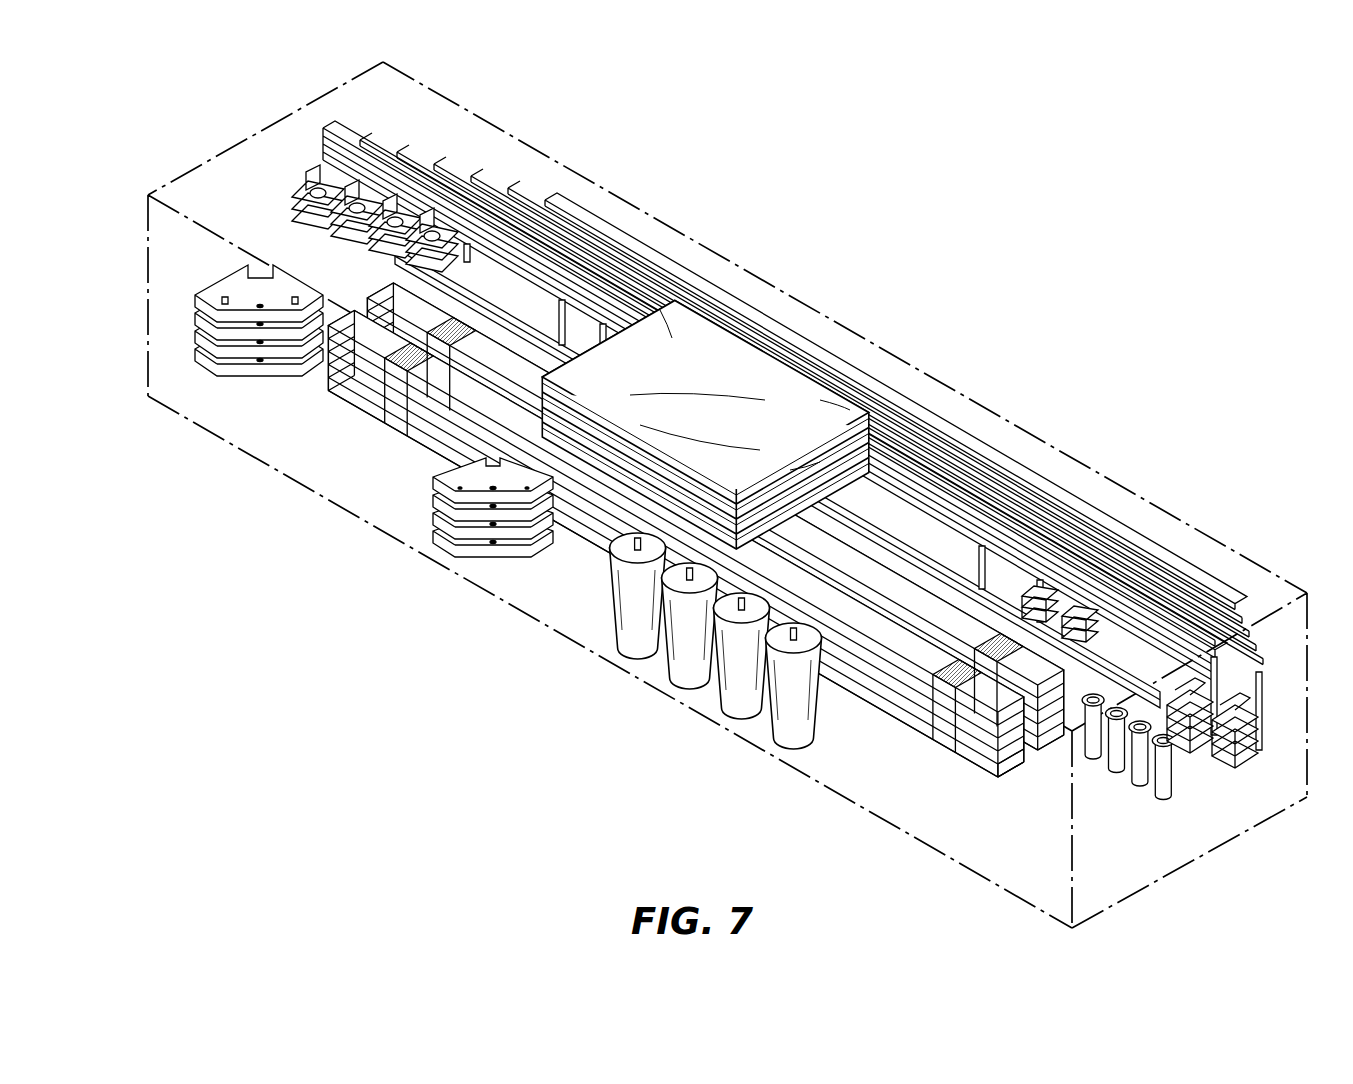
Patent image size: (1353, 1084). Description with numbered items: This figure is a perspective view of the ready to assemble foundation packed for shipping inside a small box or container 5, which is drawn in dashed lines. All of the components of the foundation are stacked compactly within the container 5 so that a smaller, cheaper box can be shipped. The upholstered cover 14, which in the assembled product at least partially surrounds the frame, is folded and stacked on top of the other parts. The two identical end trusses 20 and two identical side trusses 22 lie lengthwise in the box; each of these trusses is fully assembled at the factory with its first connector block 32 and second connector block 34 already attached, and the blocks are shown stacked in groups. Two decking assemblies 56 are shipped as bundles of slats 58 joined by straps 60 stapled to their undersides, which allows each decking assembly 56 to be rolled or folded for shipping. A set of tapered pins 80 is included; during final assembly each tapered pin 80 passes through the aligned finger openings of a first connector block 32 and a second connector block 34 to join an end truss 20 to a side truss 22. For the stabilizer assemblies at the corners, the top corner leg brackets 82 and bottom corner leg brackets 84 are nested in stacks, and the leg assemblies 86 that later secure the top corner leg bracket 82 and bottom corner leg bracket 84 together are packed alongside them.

The box or container 5 is at (487, 115).
The upholstered cover 14 is at (718, 378).
The end trusses 20 is at (930, 463).
The side trusses 22 is at (1165, 617).
The first connector block 32 is at (330, 245).
The second connector block 34 is at (1222, 735).
The decking assemblies 56 is at (727, 554).
The slats 58 is at (995, 758).
The straps 60 is at (393, 418).
The tapered pin 80 is at (1132, 777).
The top corner leg bracket 82 is at (433, 525).
The bottom corner leg bracket 84 is at (192, 337).
The leg assembly 86 is at (680, 662).